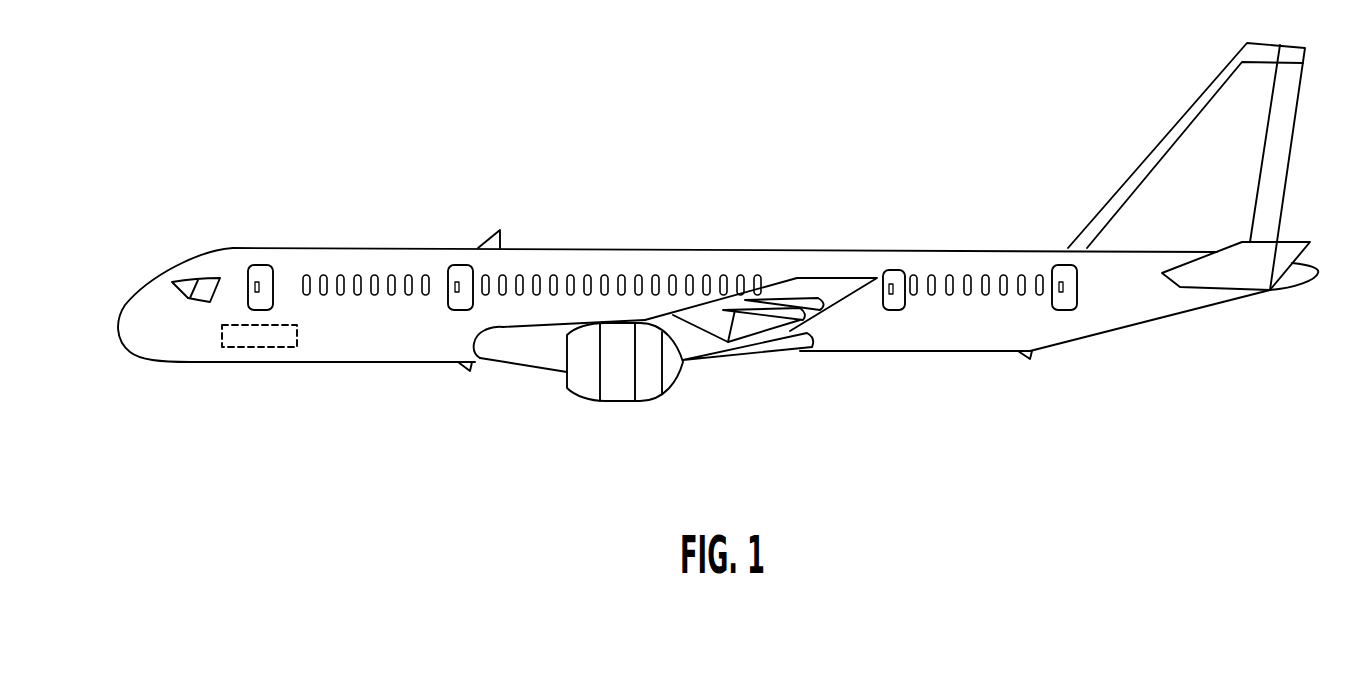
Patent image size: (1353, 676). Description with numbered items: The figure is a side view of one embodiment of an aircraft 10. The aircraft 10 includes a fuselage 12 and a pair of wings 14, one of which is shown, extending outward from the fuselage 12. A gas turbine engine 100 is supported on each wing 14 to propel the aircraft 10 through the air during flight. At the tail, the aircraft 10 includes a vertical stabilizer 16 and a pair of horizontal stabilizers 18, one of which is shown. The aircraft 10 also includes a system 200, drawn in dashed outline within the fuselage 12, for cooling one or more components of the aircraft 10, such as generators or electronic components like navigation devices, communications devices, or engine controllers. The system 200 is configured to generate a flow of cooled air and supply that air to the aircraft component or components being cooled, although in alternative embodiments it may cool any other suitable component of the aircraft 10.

The aircraft 10 is at (228, 152).
The fuselage 12 is at (618, 247).
The wing 14 is at (808, 278).
The vertical stabilizer 16 is at (1158, 153).
The horizontal stabilizer 18 is at (1208, 282).
The gas turbine engine 100 is at (652, 398).
The system 200 is at (255, 348).